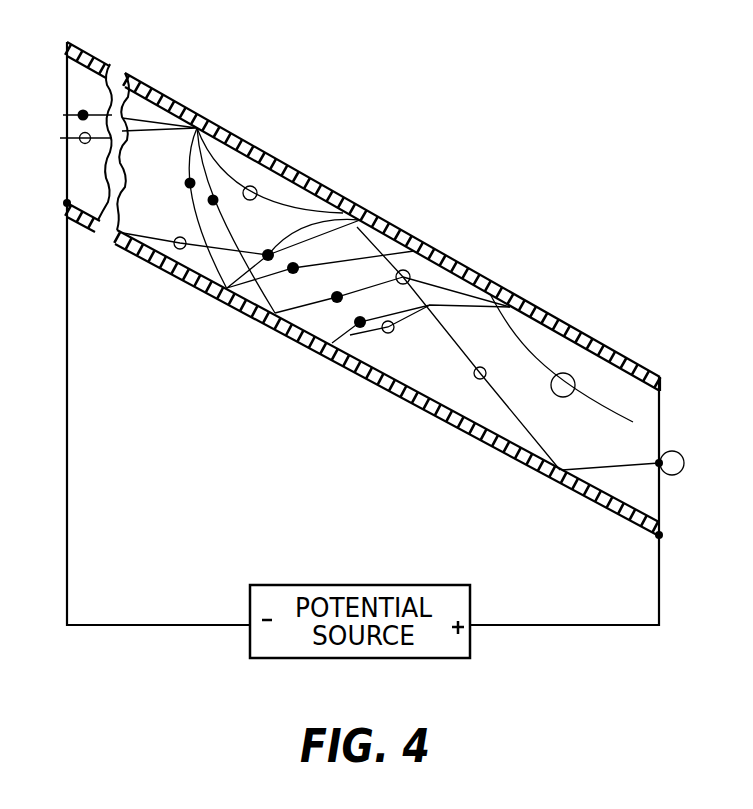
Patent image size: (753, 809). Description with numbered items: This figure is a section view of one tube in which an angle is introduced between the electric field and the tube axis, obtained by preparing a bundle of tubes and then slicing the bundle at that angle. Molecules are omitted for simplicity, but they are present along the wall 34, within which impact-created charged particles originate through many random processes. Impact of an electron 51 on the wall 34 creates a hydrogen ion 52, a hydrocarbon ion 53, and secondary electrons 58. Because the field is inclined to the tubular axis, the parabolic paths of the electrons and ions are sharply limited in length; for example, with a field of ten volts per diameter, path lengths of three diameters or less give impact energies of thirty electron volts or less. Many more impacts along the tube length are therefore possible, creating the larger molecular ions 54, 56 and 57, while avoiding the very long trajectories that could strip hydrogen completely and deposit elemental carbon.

The wall 34 is at (393, 228).
The electron 51 is at (87, 102).
The hydrogen ion 52 is at (399, 338).
The hydrocarbon ion 53 is at (249, 200).
The larger molecular ion 54 is at (396, 277).
The larger molecular ion 56 is at (563, 397).
The larger molecular ion 57 is at (678, 474).
The secondary electrons 58 is at (185, 192).